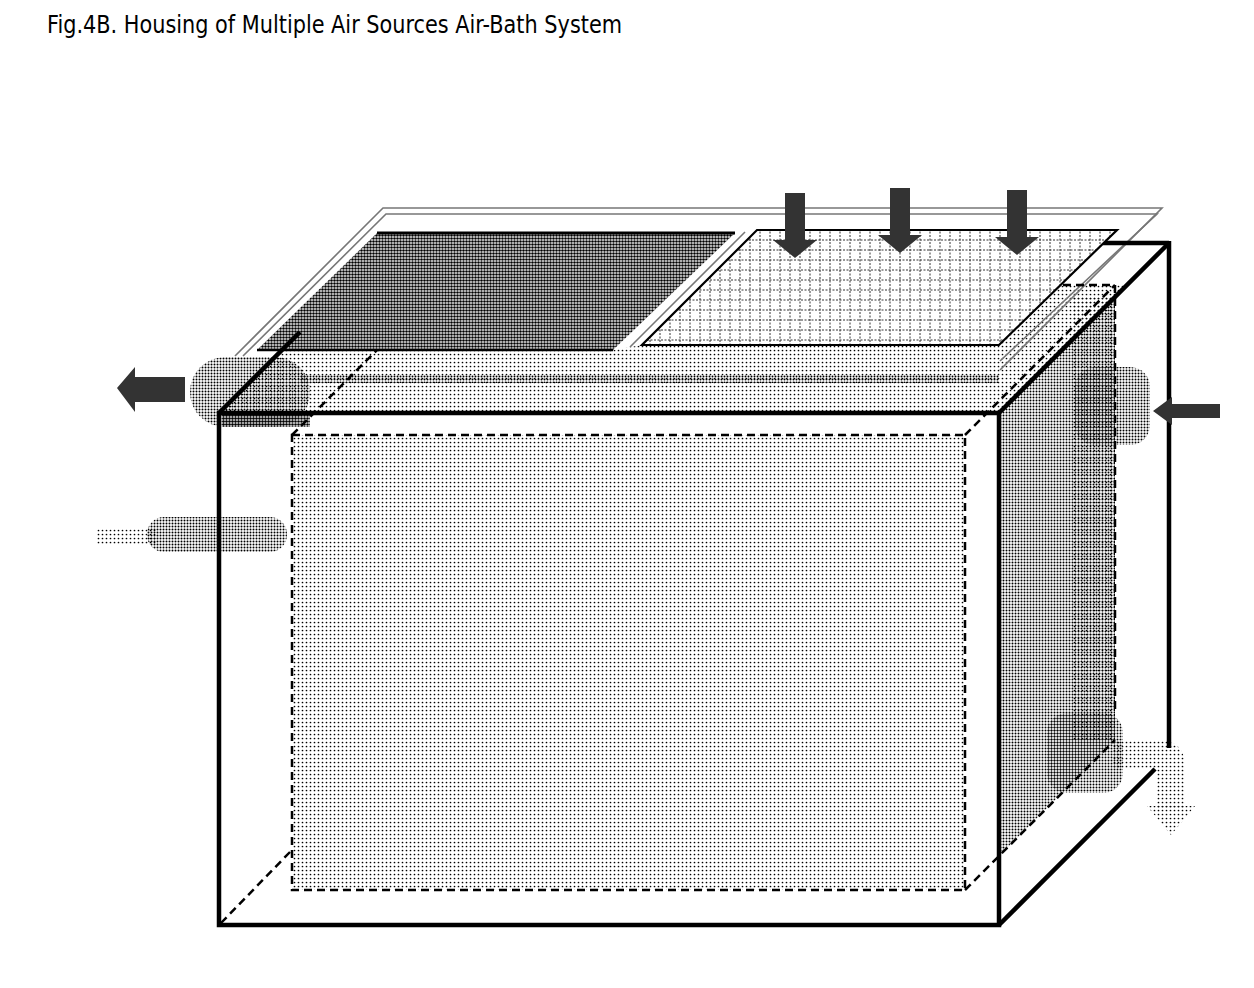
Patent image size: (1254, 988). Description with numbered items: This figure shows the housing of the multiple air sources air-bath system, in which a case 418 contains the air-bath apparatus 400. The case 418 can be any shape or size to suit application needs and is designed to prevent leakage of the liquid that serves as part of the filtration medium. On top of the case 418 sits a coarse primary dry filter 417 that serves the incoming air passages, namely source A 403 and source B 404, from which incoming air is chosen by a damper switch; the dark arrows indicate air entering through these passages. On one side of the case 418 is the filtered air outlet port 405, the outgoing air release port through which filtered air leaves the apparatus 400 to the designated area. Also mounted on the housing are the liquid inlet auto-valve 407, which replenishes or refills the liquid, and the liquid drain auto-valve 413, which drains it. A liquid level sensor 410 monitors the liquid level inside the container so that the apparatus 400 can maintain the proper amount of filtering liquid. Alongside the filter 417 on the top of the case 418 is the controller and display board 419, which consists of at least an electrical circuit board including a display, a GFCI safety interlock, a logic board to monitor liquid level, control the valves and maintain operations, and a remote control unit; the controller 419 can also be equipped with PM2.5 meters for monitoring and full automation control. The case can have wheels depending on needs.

The multiple air sources air-bath apparatus 400 is at (694, 467).
The source A 403 is at (906, 203).
The source B 404 is at (1150, 407).
The filtered air outlet port 405 is at (213, 347).
The liquid inlet auto-valve 407 is at (185, 555).
The liquid level sensor 410 is at (350, 731).
The liquid drain auto-valve 413 is at (1187, 751).
The coarse primary dry filter 417 is at (1062, 253).
The case 418 is at (1062, 853).
The controller and display board 419 is at (442, 257).